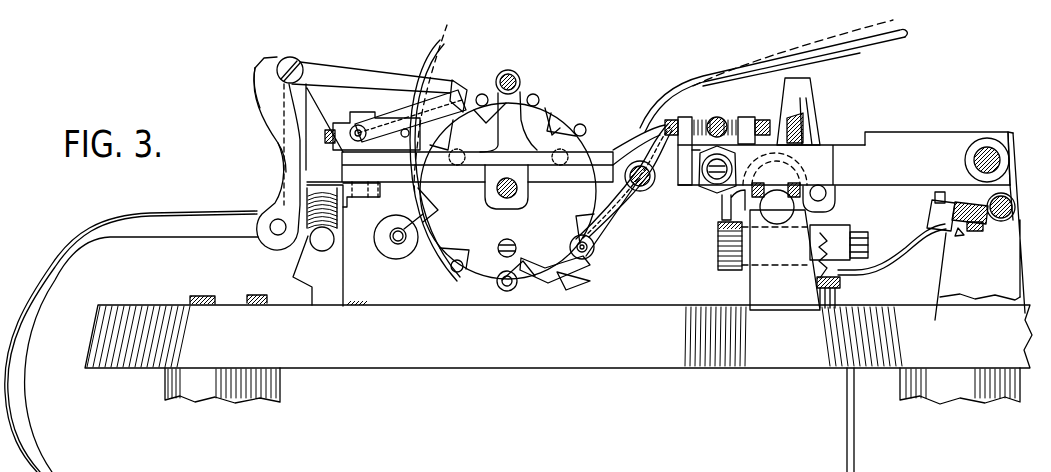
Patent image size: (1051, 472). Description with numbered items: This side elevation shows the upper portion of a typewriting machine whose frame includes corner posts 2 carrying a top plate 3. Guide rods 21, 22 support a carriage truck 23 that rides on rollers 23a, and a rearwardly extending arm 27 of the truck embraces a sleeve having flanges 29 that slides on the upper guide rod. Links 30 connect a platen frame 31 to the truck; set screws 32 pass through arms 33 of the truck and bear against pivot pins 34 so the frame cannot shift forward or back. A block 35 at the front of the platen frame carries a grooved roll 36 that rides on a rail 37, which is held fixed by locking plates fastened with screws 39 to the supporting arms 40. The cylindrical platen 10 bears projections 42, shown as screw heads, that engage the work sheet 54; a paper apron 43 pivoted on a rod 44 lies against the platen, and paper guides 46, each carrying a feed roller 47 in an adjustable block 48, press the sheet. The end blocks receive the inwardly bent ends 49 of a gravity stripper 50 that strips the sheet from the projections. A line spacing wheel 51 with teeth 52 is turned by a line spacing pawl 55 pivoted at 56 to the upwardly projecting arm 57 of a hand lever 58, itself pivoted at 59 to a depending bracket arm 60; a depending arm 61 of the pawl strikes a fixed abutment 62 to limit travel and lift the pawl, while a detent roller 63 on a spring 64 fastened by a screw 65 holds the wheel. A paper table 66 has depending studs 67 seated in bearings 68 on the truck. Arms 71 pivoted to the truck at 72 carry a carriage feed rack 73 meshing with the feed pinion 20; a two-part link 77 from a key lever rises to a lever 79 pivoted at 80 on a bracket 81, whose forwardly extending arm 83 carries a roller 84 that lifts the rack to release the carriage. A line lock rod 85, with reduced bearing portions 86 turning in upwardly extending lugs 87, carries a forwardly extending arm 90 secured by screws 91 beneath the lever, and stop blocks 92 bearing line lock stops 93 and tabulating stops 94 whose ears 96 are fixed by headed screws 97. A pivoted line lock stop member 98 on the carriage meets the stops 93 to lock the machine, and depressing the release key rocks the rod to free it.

The corner posts 2 is at (196, 368).
The top plate 3 is at (558, 336).
The platen 10 is at (588, 150).
The feed pinion 20 is at (738, 273).
The guide rod 21 is at (776, 203).
The guide rod 22 is at (983, 148).
The carriage truck 23 is at (844, 163).
The rollers 23a is at (806, 139).
The rearwardly extending arm 27 is at (937, 158).
The flanges 29 is at (964, 161).
The links 30 is at (720, 165).
The platen frame 31 is at (543, 156).
The set screws 32 is at (715, 118).
The arms 33 is at (686, 116).
The pivot pins 34 is at (715, 138).
The block 35 is at (378, 190).
The grooved roll 36 is at (338, 223).
The rod or rail 37 is at (335, 239).
The screws 39 is at (265, 296).
The supporting arms 40 is at (318, 245).
The projections 42 is at (521, 83).
The paper apron 43 is at (610, 233).
The rod 44 is at (640, 162).
The paper guides 46 is at (431, 258).
The feed roller 47 is at (383, 249).
The adjustable block 48 is at (358, 124).
The inwardly bent ends 49 is at (376, 130).
The gravity stripper 50 is at (452, 84).
The line spacing wheel 51 is at (507, 187).
The teeth 52 is at (557, 125).
The work sheet 54 is at (448, 35).
The line spacing pawl 55 is at (363, 72).
The pivot 56 is at (291, 58).
The upwardly projecting arm 57 is at (280, 152).
The hand lever 58 is at (117, 237).
The pivot 59 is at (278, 236).
The depending bracket arm 60 is at (277, 210).
The depending arm 61 is at (300, 97).
The fixed abutment 62 is at (257, 66).
The detent roller 63 is at (589, 258).
The spring 64 is at (612, 218).
The screw 65 is at (654, 180).
The paper table 66 is at (767, 73).
The depending studs 67 is at (801, 86).
The bearings 68 is at (812, 119).
The arms 71 is at (790, 171).
The pivot 72 is at (827, 190).
The carriage feed rack 73 is at (730, 206).
The two-part link 77 is at (846, 394).
The lever 79 is at (845, 227).
The pivot 80 is at (861, 241).
The bracket 81 is at (833, 292).
The forwardly extending arm 83 is at (824, 232).
The roller 84 is at (718, 245).
The line lock rod 85 is at (972, 233).
The reduced portions 86 is at (963, 200).
The lugs 87 is at (943, 288).
The forwardly extending arm 90 is at (886, 260).
The screws 91 is at (970, 229).
The stop blocks 92 is at (1015, 192).
The line lock stop 93 is at (940, 226).
The tabulating stop 94 is at (1009, 136).
The ears 96 is at (1027, 223).
The headed screws 97 is at (1002, 222).
The line lock stop member 98 is at (934, 197).